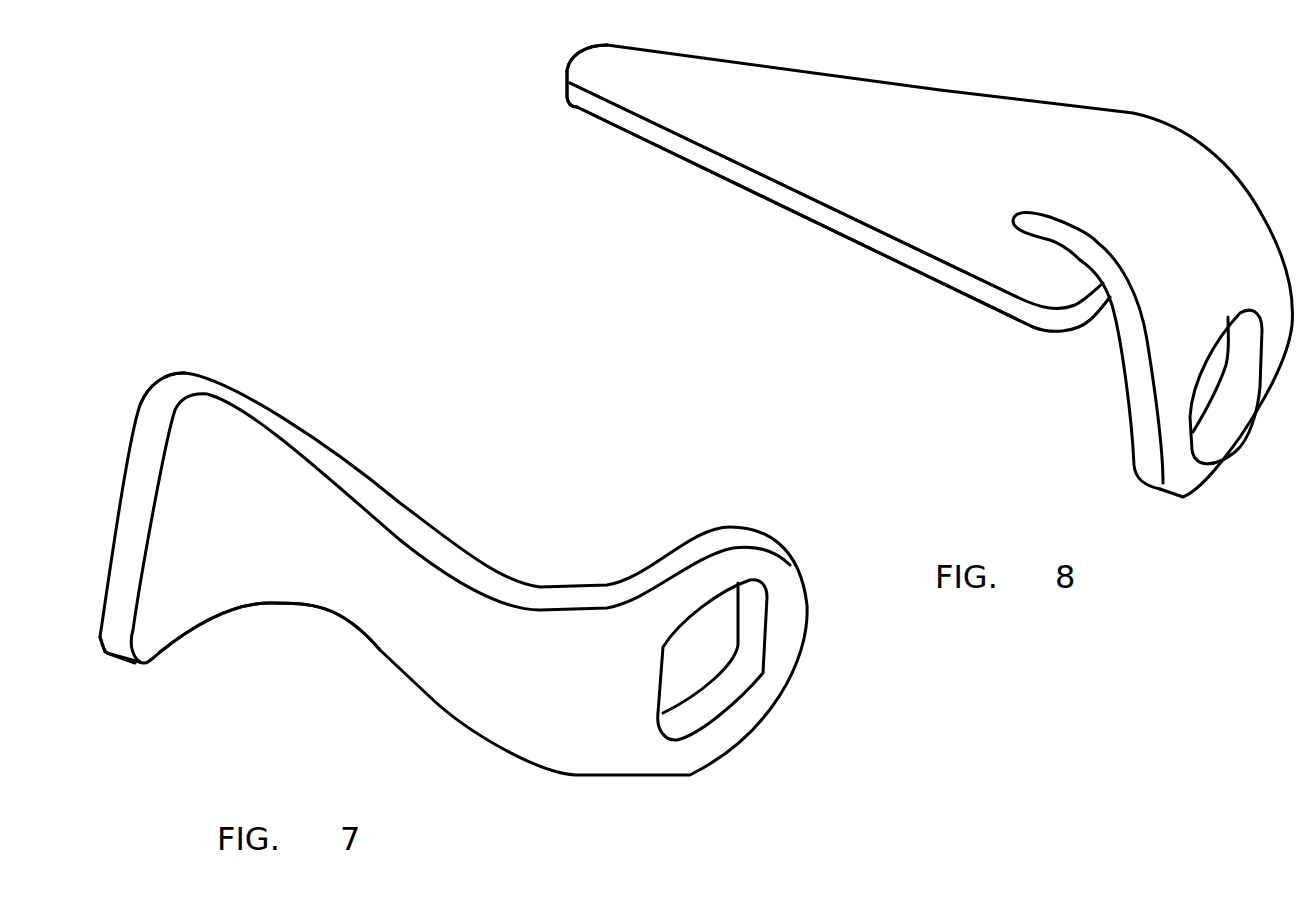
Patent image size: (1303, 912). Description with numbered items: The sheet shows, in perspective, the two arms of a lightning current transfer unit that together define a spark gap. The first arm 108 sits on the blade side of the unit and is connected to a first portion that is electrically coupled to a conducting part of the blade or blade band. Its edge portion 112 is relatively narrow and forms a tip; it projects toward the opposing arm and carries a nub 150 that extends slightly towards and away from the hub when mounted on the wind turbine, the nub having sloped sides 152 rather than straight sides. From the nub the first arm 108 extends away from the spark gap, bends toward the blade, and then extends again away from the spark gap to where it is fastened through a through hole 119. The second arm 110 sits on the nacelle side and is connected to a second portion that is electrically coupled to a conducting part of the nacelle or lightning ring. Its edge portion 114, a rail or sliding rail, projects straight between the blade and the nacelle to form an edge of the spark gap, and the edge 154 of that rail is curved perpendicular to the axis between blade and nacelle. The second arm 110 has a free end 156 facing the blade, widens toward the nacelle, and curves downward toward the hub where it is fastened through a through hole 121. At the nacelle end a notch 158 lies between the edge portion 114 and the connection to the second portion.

In FIG. 7, the first arm 108 is at (457, 526).
In FIG. 8, the second arm 110 is at (793, 220).
In FIG. 7, the edge portion 112 is at (118, 657).
In FIG. 8, the edge portion 114 is at (713, 173).
In FIG. 7, the through hole 119 is at (728, 693).
In FIG. 8, the through hole 121 is at (1220, 427).
In FIG. 7, the nub 150 is at (175, 390).
In FIG. 7, the sloped sides 152 is at (227, 613).
In FIG. 8, the edge 154 is at (643, 127).
In FIG. 8, the free end 156 is at (567, 70).
In FIG. 8, the notch 158 is at (1067, 240).